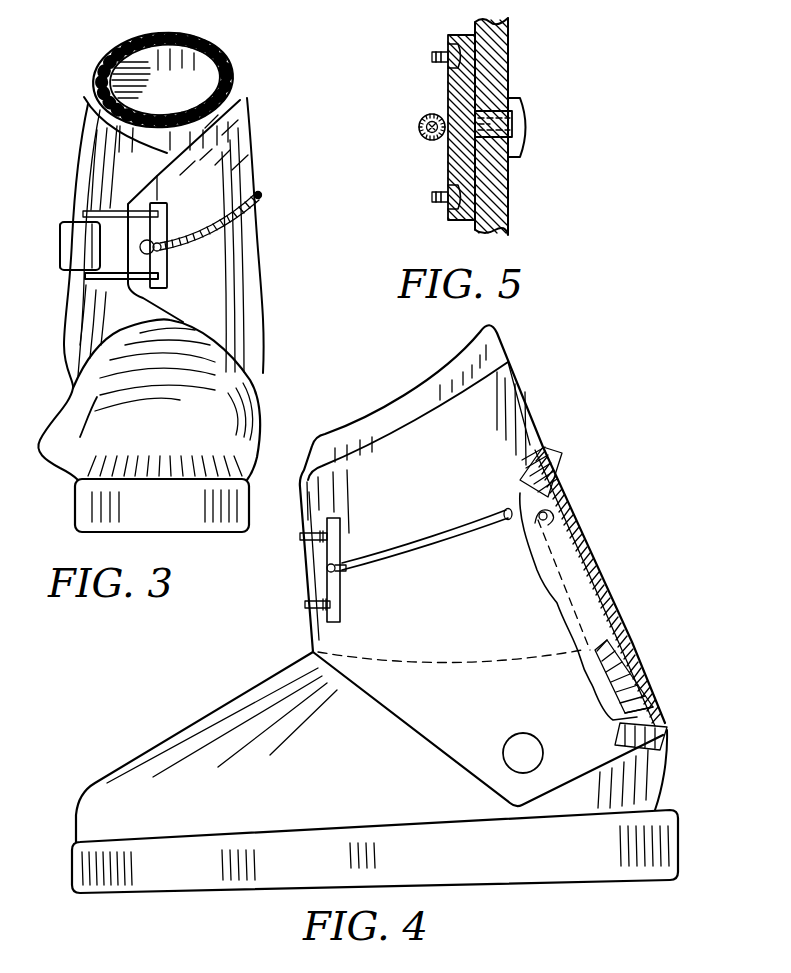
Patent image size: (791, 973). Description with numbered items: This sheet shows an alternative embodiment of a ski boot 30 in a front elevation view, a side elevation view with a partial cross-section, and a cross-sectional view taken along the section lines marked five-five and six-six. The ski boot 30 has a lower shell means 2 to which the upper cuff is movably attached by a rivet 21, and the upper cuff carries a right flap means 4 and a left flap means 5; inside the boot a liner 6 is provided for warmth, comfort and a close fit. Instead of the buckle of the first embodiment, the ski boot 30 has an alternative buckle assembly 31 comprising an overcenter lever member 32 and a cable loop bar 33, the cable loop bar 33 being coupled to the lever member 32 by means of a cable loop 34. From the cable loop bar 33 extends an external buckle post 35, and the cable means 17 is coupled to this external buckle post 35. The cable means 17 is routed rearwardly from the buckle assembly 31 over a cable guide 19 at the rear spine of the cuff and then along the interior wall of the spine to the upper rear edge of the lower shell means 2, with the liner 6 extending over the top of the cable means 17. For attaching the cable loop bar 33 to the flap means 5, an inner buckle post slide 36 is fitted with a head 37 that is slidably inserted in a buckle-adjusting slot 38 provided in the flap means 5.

In FIG. 3, the lower shell means 2 is at (166, 425).
In FIG. 4, the lower shell means 2 is at (150, 753).
In FIG. 3, the right flap means 4 is at (73, 351).
In FIG. 3, the left flap means 5 is at (270, 337).
In FIG. 4, the left flap means 5 is at (312, 656).
In FIG. 5, the liner 6 is at (440, 198).
In FIG. 3, the cable means 17 is at (256, 232).
In FIG. 5, the cable means 17 is at (431, 140).
In FIG. 4, the cable means 17 is at (412, 561).
In FIG. 4, the cable guide 19 is at (548, 523).
In FIG. 4, the rivet 21 is at (530, 747).
In FIG. 3, the ski boot 30 is at (266, 159).
In FIG. 3, the buckle assembly 31 is at (47, 241).
In FIG. 3, the overcenter lever member 32 is at (74, 257).
In FIG. 3, the cable loop bar 33 is at (170, 263).
In FIG. 5, the cable loop bar 33 is at (453, 34).
In FIG. 4, the cable loop bar 33 is at (372, 635).
In FIG. 3, the cable loop 34 is at (83, 213).
In FIG. 5, the cable loop 34 is at (431, 58).
In FIG. 4, the cable loop 34 is at (304, 539).
In FIG. 5, the external buckle post 35 is at (427, 116).
In FIG. 5, the inner buckle post slide 36 is at (538, 129).
In FIG. 5, the head 37 is at (513, 101).
In FIG. 3, the buckle-adjusting slot 38 is at (166, 237).
In FIG. 5, the buckle-adjusting slot 38 is at (512, 180).
In FIG. 4, the buckle-adjusting slot 38 is at (340, 563).